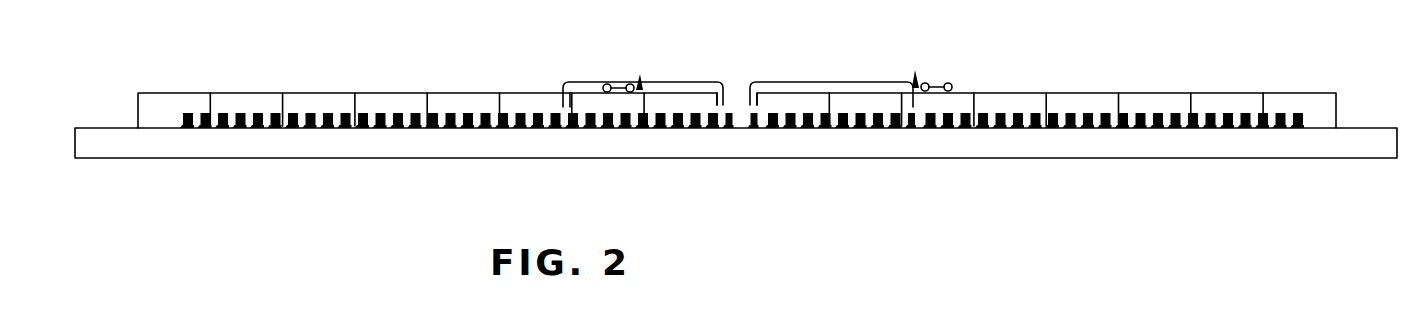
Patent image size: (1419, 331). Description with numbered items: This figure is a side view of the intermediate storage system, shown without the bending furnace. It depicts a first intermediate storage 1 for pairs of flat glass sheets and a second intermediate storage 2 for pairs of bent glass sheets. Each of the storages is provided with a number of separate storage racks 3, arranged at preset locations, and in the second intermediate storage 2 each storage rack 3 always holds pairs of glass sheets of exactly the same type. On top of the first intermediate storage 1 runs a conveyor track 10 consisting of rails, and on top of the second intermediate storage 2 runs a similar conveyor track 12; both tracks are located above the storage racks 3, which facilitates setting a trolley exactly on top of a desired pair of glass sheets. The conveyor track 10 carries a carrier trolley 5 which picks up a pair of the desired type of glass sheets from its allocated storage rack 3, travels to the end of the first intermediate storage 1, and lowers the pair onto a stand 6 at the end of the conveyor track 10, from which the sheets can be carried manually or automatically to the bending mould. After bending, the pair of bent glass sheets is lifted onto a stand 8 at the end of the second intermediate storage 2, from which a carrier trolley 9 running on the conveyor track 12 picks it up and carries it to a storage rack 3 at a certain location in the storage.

The first intermediate storage 1 is at (737, 67).
The second intermediate storage 2 is at (469, 80).
The storage rack 3 is at (558, 128).
The carrier trolley 5 is at (918, 82).
The stand 6 is at (748, 105).
The stand 8 is at (732, 123).
The carrier trolley 9 is at (637, 80).
The conveyor track 10 is at (1070, 90).
The conveyor track 12 is at (383, 92).